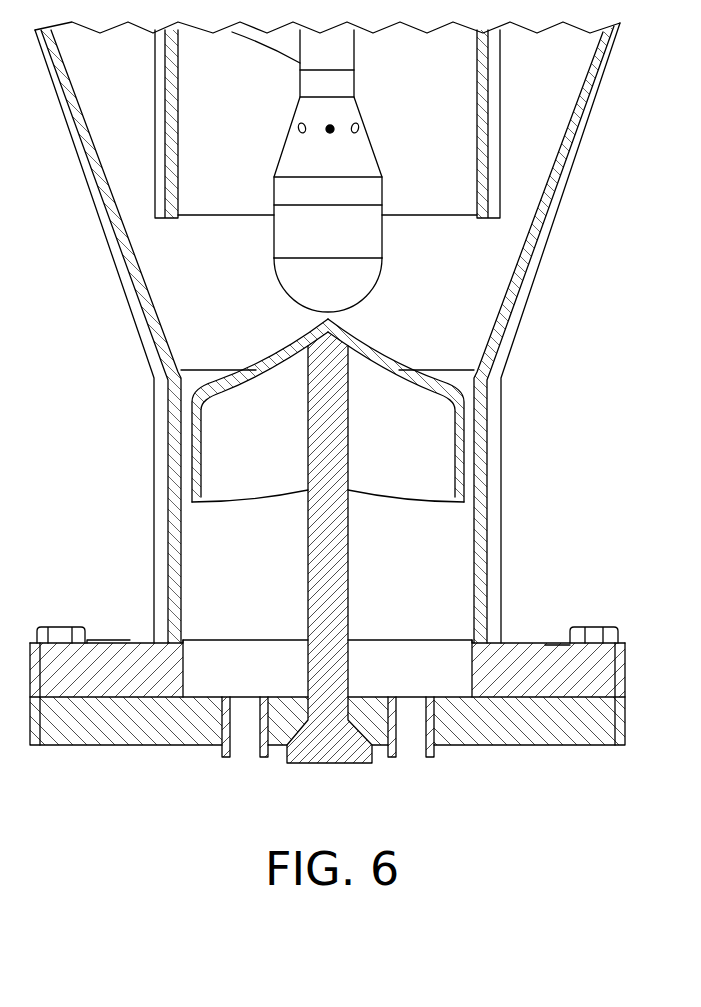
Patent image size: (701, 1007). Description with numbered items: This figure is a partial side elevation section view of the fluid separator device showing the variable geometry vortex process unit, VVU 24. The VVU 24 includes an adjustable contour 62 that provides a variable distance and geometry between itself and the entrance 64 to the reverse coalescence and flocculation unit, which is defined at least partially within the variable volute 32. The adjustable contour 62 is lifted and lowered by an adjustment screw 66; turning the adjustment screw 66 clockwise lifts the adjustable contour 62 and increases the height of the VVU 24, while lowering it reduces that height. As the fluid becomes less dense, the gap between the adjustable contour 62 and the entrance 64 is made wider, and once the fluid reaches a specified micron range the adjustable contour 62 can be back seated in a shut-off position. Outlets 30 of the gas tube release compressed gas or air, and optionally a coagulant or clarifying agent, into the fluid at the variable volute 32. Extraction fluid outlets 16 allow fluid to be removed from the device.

The extraction fluid outlet 16 is at (245, 735).
The variable volute unit (VVU) 24 is at (244, 305).
The gas tube outlet 30 is at (370, 133).
The variable volute 32 is at (228, 176).
The adjustable contour 62 is at (397, 380).
The entrance 64 is at (410, 238).
The adjustment screw 66 is at (303, 541).